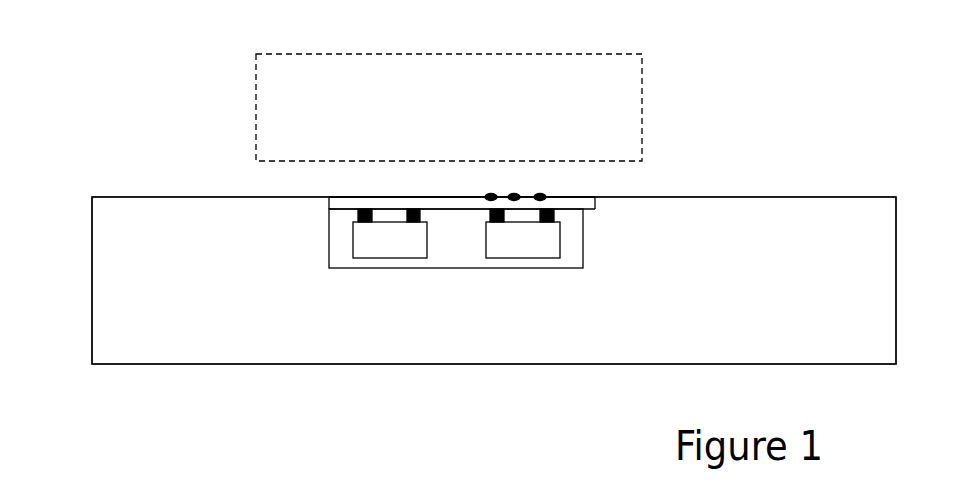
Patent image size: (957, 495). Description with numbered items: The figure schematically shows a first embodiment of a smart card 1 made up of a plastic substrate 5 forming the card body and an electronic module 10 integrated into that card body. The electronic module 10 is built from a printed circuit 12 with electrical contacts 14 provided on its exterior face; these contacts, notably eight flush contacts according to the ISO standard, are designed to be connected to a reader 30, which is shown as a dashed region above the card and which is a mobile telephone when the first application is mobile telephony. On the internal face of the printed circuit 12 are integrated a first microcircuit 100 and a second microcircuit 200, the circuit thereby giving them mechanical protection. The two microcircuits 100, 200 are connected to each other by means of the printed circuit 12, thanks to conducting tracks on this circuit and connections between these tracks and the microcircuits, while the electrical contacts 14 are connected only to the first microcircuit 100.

The smart card 1 is at (97, 130).
The plastic substrate 5 is at (157, 335).
The electronic module 10 is at (455, 165).
The printed circuit 12 is at (318, 205).
The electrical contacts 14 is at (520, 180).
The reader 30 is at (622, 95).
The first microcircuit 100 is at (517, 240).
The second microcircuit 200 is at (393, 240).